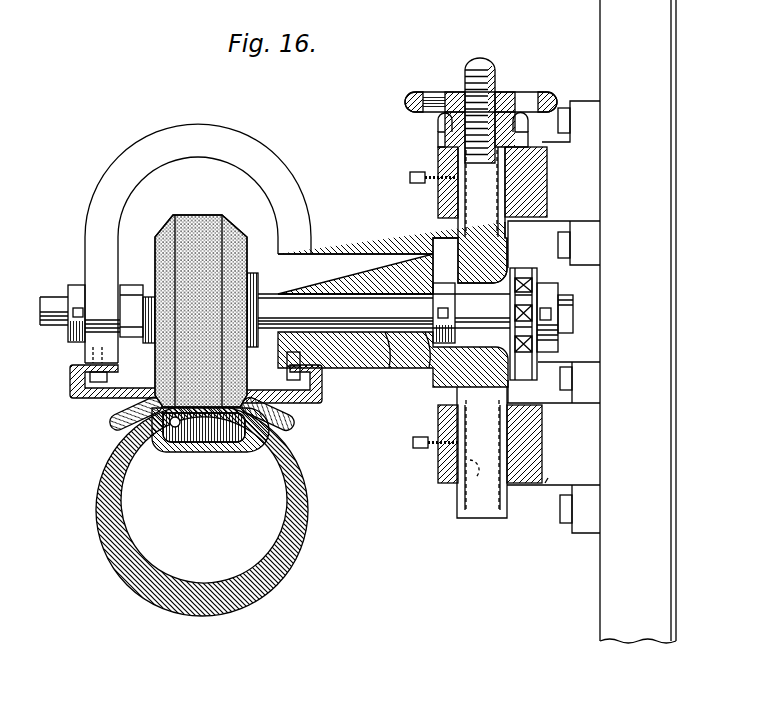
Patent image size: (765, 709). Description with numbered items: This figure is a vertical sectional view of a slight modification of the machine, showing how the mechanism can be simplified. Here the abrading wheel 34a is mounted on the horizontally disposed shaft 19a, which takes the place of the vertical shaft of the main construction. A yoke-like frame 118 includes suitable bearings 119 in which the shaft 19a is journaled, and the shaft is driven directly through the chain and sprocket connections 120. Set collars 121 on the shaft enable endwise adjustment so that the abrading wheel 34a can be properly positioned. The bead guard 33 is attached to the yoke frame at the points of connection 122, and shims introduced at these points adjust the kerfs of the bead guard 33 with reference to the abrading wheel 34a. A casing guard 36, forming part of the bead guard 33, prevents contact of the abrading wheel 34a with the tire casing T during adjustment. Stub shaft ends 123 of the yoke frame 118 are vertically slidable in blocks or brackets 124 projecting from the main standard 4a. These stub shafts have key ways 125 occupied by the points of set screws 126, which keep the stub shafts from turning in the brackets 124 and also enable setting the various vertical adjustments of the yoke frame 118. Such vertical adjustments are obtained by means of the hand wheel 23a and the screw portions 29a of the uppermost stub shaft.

The main standard 4a is at (655, 375).
The yoke-like frame 118 is at (257, 152).
The bearings 119 is at (384, 265).
The chain and sprocket connections 120 is at (509, 268).
The set collars 121 is at (65, 338).
The points of connection 122 is at (72, 395).
The stub shaft ends 123 is at (473, 200).
The blocks or brackets 124 is at (547, 480).
The key ways 125 is at (473, 467).
The set screws 126 is at (411, 178).
The horizontally disposed shaft 19a is at (388, 318).
The hand wheel 23a is at (530, 97).
The screw portions 29a is at (495, 62).
The bead guard 33 is at (305, 403).
The abrading wheel 34a is at (200, 218).
The casing guard 36 is at (253, 349).
The tire casing T is at (290, 567).